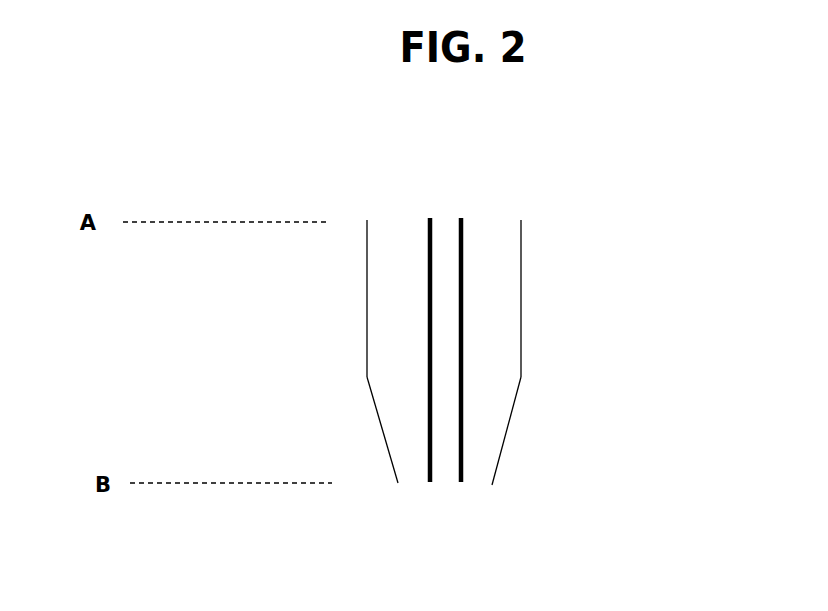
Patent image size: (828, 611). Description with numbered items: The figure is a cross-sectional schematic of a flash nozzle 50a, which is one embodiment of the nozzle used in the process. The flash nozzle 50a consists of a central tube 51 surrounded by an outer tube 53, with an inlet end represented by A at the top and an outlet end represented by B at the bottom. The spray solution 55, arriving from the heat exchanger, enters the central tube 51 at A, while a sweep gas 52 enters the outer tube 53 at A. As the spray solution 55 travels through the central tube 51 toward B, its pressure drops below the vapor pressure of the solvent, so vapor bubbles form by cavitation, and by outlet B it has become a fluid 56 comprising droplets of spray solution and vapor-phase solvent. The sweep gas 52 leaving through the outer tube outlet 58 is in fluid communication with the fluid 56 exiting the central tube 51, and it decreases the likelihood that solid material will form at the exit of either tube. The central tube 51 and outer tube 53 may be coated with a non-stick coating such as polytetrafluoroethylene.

The flash nozzle 50a is at (549, 328).
The central tube 51 is at (463, 278).
The sweep gas 52 is at (442, 189).
The outer tube 53 is at (366, 322).
The spray solution 55 is at (446, 227).
The fluid 56 is at (446, 485).
The outer tube outlet 58 is at (413, 482).